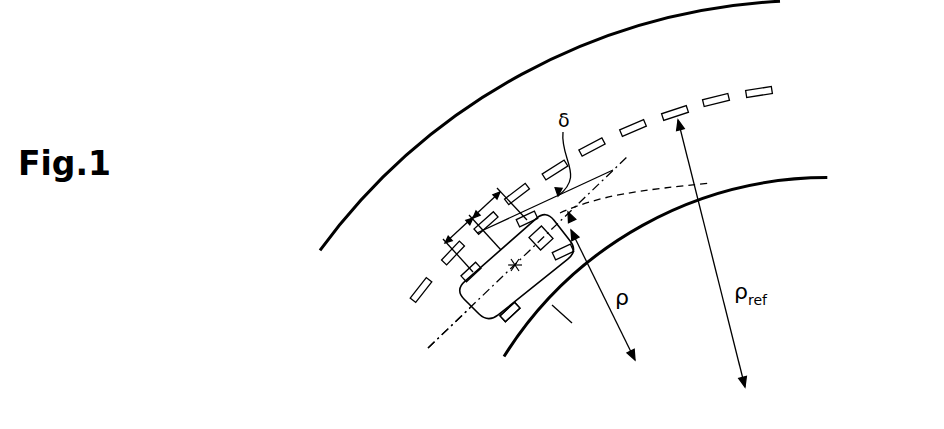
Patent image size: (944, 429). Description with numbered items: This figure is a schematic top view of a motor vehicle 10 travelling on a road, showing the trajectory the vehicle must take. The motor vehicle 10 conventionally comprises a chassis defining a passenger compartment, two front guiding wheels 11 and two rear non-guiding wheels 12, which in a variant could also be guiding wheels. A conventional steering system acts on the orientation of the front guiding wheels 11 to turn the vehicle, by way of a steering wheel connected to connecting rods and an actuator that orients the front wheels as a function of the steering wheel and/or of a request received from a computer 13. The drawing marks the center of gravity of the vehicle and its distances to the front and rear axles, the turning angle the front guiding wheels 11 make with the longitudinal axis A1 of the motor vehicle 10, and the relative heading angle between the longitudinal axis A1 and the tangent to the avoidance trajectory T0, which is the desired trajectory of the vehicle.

The motor vehicle 10 is at (455, 293).
The front guiding wheels 11 is at (566, 244).
The rear non-guiding wheels 12 is at (514, 318).
The computer 13 is at (541, 228).
The longitudinal axis A1 is at (463, 325).
The avoidance trajectory T0 is at (648, 194).